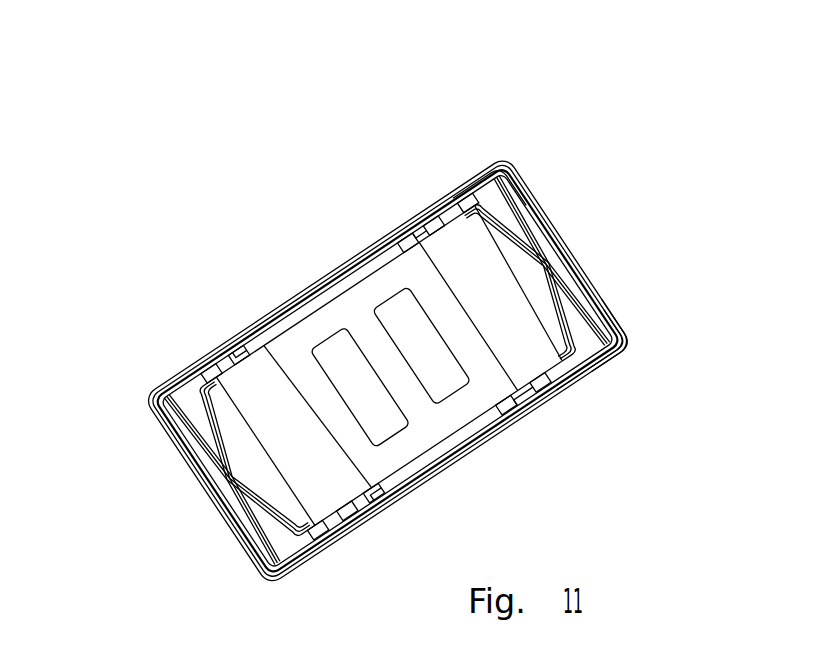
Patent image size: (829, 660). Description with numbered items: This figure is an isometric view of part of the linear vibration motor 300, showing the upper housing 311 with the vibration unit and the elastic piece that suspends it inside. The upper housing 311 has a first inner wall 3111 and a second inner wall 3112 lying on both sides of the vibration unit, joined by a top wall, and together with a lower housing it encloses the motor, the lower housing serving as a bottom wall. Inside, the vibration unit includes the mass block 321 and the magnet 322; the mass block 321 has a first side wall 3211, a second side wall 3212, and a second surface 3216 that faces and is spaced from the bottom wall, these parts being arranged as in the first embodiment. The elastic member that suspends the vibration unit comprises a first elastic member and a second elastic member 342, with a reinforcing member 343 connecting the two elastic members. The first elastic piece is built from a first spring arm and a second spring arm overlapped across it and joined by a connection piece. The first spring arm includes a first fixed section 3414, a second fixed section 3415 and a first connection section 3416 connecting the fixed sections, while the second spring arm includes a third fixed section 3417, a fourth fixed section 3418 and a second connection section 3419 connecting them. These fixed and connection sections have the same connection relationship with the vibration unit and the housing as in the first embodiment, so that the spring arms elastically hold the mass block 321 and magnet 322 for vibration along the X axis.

The linear vibration motor 300 is at (329, 38).
The upper housing 311 is at (341, 256).
The first inner wall 3111 is at (307, 322).
The second inner wall 3112 is at (490, 440).
The mass block 321 is at (425, 490).
The first side wall 3211 is at (240, 333).
The second side wall 3212 is at (380, 494).
The second surface 3216 is at (303, 313).
The magnet 322 is at (435, 368).
The second elastic member 342 is at (230, 481).
The reinforcing member 343 is at (535, 404).
The first fixed section 3414 is at (475, 201).
The second fixed section 3415 is at (607, 367).
The first connection section 3416 is at (580, 298).
The third fixed section 3417 is at (579, 382).
The fourth fixed section 3418 is at (468, 185).
The second connection section 3419 is at (545, 256).